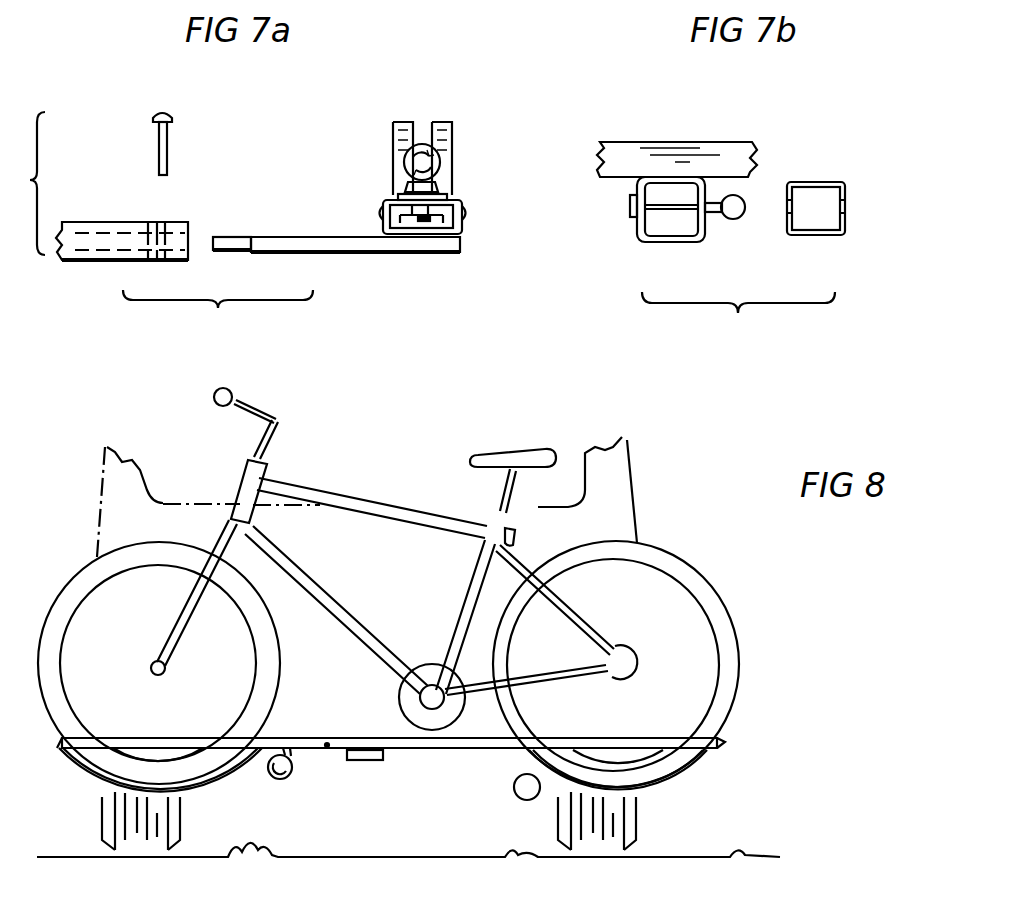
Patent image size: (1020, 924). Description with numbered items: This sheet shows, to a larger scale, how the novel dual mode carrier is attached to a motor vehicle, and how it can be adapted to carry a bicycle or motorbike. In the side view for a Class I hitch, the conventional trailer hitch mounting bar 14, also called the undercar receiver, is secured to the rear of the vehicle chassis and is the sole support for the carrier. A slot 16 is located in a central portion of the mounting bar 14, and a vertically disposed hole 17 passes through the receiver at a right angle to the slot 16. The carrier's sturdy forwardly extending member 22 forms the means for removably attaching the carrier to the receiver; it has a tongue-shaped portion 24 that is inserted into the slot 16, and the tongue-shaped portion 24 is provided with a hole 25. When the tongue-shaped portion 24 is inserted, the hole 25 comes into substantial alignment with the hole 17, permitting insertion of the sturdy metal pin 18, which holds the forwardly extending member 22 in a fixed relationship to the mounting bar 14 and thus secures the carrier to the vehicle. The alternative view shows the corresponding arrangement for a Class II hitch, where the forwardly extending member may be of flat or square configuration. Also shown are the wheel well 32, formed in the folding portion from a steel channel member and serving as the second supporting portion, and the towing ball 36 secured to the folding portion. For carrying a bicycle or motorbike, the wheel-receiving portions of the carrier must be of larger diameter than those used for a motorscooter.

The trailer hitch mounting bar 14 is at (90, 262).
The slot 16 is at (147, 222).
The vertically disposed hole 17 is at (165, 222).
The pin 18 is at (165, 140).
The forwardly extending member 22 is at (375, 245).
The tongue-shaped portion 24 is at (237, 237).
The hole 25 is at (253, 237).
The wheel well 32 is at (452, 127).
The towing ball 36 is at (437, 177).